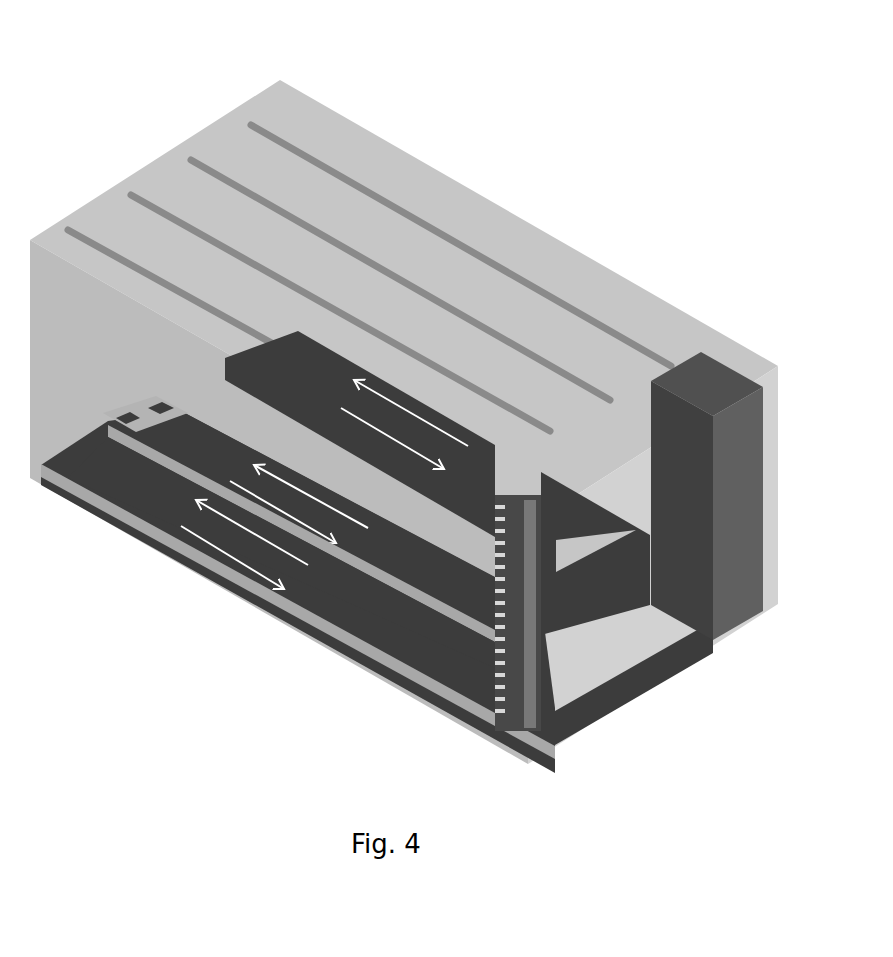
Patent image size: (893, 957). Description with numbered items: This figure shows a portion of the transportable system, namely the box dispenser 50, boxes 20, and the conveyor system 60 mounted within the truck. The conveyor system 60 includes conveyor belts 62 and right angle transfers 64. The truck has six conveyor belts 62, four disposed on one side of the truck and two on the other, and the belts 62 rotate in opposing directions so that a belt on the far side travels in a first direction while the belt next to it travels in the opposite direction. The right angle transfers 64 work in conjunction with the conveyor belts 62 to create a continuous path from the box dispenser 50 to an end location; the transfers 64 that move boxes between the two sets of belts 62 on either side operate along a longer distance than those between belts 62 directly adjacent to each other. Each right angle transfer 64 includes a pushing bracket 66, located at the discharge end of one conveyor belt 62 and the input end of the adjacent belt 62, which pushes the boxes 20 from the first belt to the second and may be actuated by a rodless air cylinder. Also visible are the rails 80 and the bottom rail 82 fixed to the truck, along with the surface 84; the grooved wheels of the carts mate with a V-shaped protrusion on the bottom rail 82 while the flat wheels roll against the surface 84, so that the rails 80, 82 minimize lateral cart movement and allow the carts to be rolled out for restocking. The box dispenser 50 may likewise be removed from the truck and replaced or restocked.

The boxes 20 is at (520, 705).
The box dispenser 50 is at (697, 378).
The conveyor system 60 is at (83, 552).
The conveyor belts 62 is at (380, 655).
The right angle transfers 64 is at (128, 398).
The pushing bracket 66 is at (157, 397).
The rails 80 is at (428, 218).
The bottom rail 82 is at (329, 559).
The surface 84 is at (192, 541).